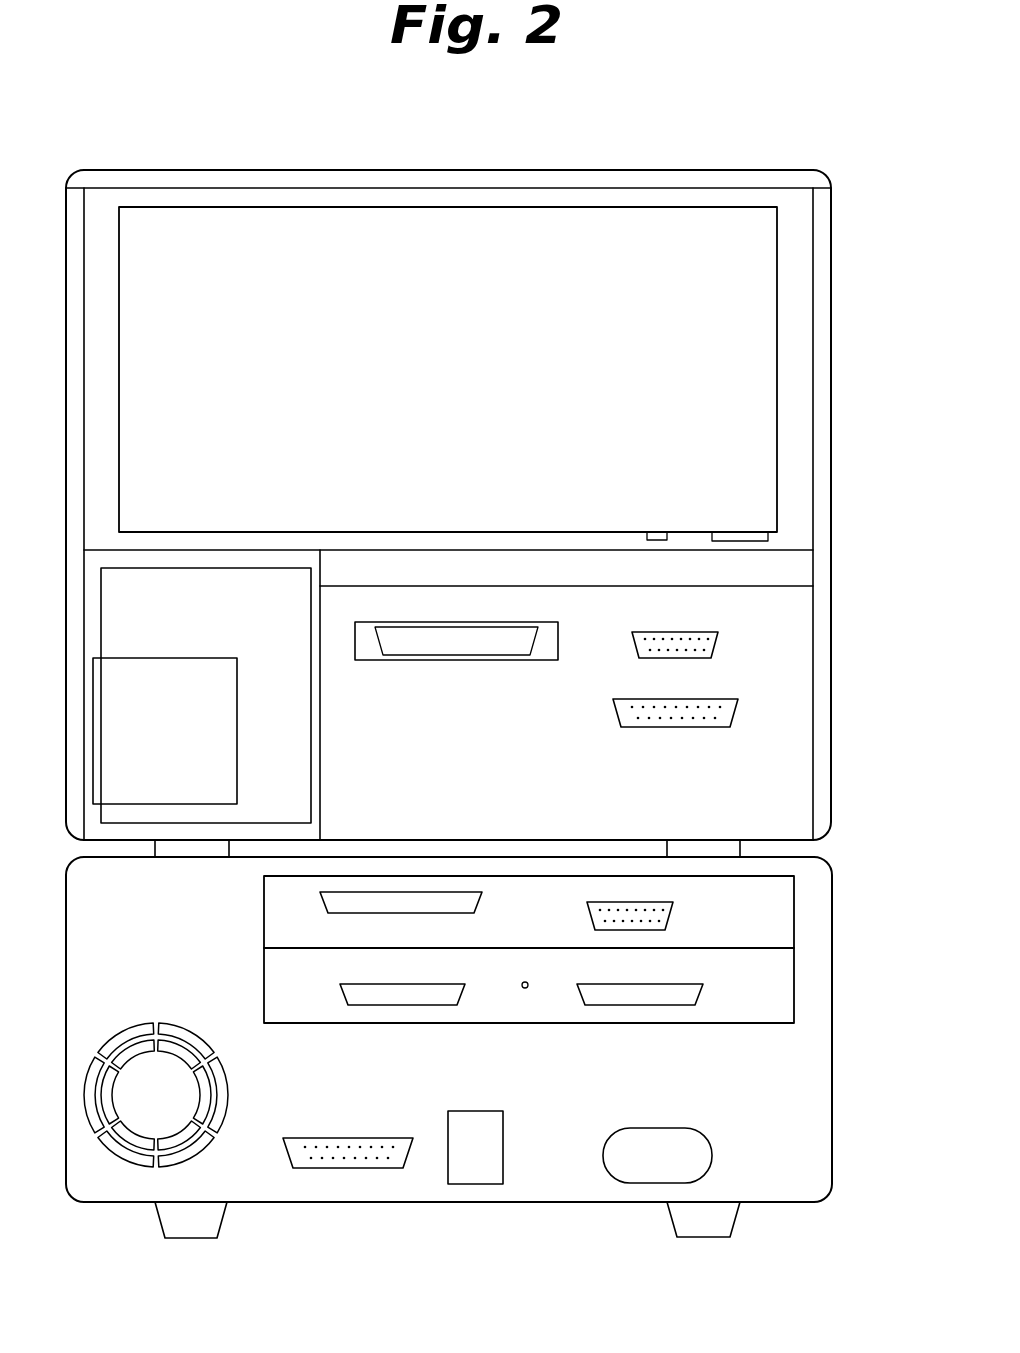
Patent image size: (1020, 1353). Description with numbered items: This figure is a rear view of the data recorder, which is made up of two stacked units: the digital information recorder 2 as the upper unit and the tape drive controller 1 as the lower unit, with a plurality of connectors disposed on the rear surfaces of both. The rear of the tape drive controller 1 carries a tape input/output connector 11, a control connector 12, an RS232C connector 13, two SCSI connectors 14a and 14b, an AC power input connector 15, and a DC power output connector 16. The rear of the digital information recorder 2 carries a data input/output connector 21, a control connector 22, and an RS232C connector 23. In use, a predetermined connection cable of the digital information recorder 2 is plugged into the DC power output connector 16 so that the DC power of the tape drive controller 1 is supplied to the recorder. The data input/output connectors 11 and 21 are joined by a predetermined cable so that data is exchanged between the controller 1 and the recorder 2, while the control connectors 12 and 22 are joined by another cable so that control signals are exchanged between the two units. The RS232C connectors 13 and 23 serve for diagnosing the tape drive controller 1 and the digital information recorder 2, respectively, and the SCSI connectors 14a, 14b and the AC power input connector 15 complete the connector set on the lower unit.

The tape drive controller 1 is at (251, 1203).
The digital information recorder 2 is at (423, 170).
The tape input/output connector 11 is at (320, 903).
The control connector 12 is at (673, 918).
The RS232C connector 13 is at (355, 1168).
The SCSI connector 14a is at (340, 996).
The SCSI connector 14b is at (703, 996).
The AC power input connector 15 is at (638, 1183).
The DC power output connector 16 is at (478, 1184).
The data input/output connector 21 is at (373, 652).
The control connector 22 is at (718, 648).
The RS232C connector 23 is at (734, 727).